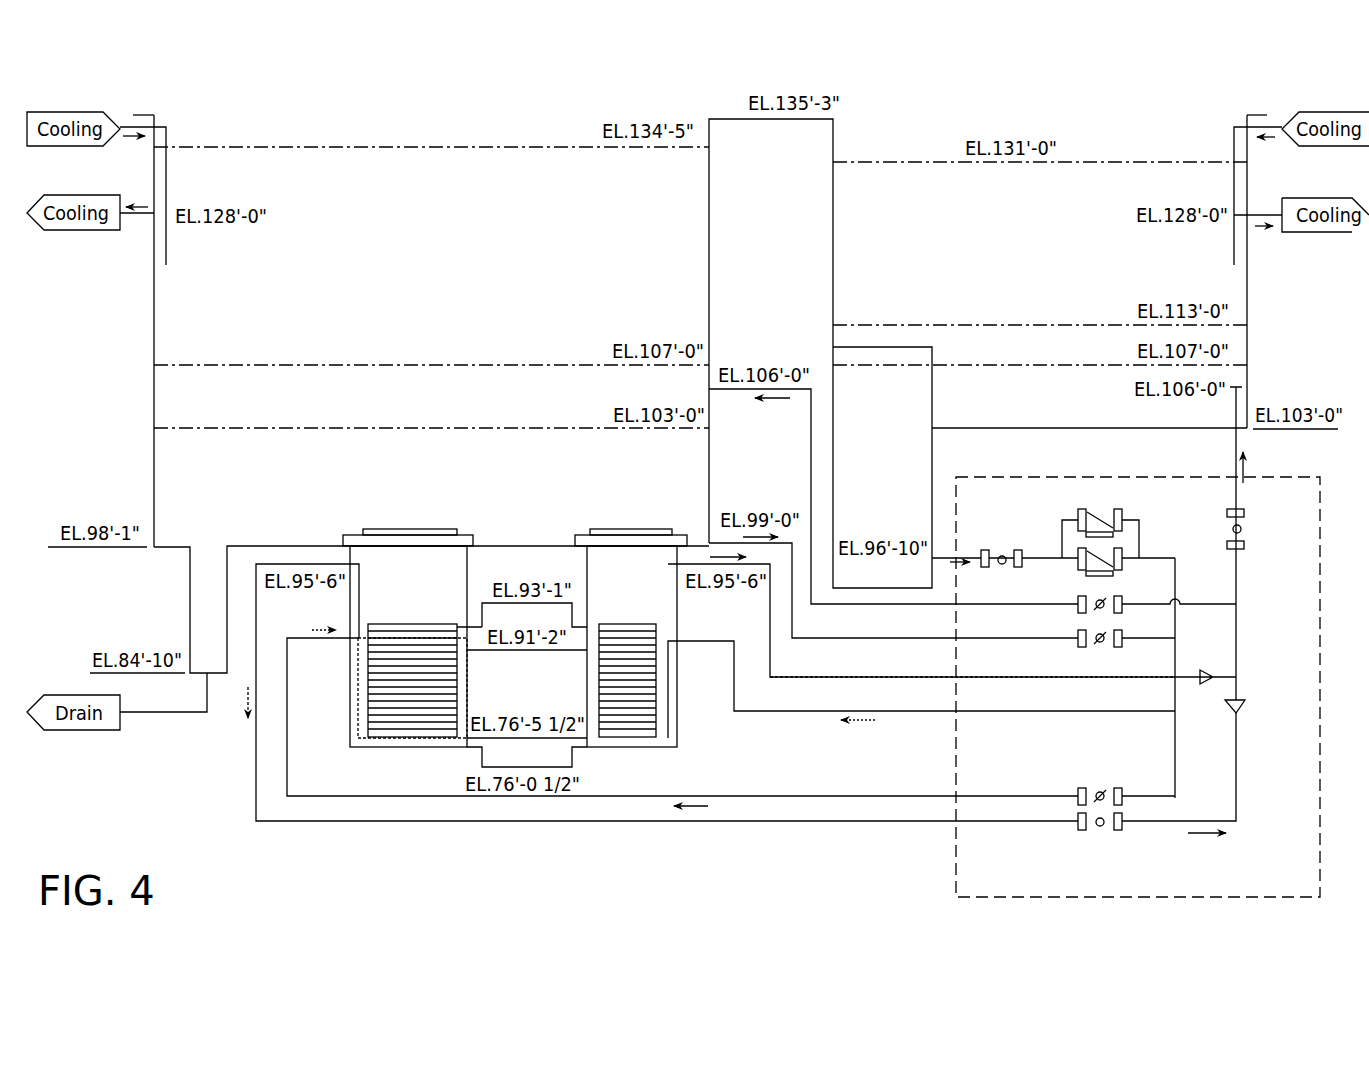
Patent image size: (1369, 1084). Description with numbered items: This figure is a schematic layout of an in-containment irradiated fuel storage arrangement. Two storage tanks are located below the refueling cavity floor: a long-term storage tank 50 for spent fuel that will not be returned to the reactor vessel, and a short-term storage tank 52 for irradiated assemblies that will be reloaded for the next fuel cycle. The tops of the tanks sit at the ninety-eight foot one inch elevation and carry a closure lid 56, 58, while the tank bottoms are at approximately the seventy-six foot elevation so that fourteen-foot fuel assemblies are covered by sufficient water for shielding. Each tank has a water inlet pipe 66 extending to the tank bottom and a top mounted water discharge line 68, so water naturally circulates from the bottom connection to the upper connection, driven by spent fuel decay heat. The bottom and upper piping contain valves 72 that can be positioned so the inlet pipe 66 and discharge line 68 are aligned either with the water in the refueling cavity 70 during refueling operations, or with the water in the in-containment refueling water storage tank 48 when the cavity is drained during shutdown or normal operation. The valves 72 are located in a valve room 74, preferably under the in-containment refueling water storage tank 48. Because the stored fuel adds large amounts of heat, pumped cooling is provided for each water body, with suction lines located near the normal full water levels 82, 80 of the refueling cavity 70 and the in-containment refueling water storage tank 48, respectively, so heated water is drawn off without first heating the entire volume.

The in-containment refueling water storage tank 48 is at (1056, 253).
The long-term storage tank 50 is at (680, 732).
The short-term storage tank 52 is at (352, 713).
The lid 56 is at (620, 541).
The closure lid 58 is at (400, 541).
The water inlet pipe 66 is at (318, 636).
The water discharge line 68 is at (288, 564).
The refueling cavity 70 is at (462, 253).
The valves 72 is at (1130, 500).
The valve room 74 is at (1292, 471).
The normal full in-containment refueling water storage tank water level 80 is at (1112, 162).
The normal full refueling cavity water level 82 is at (378, 147).